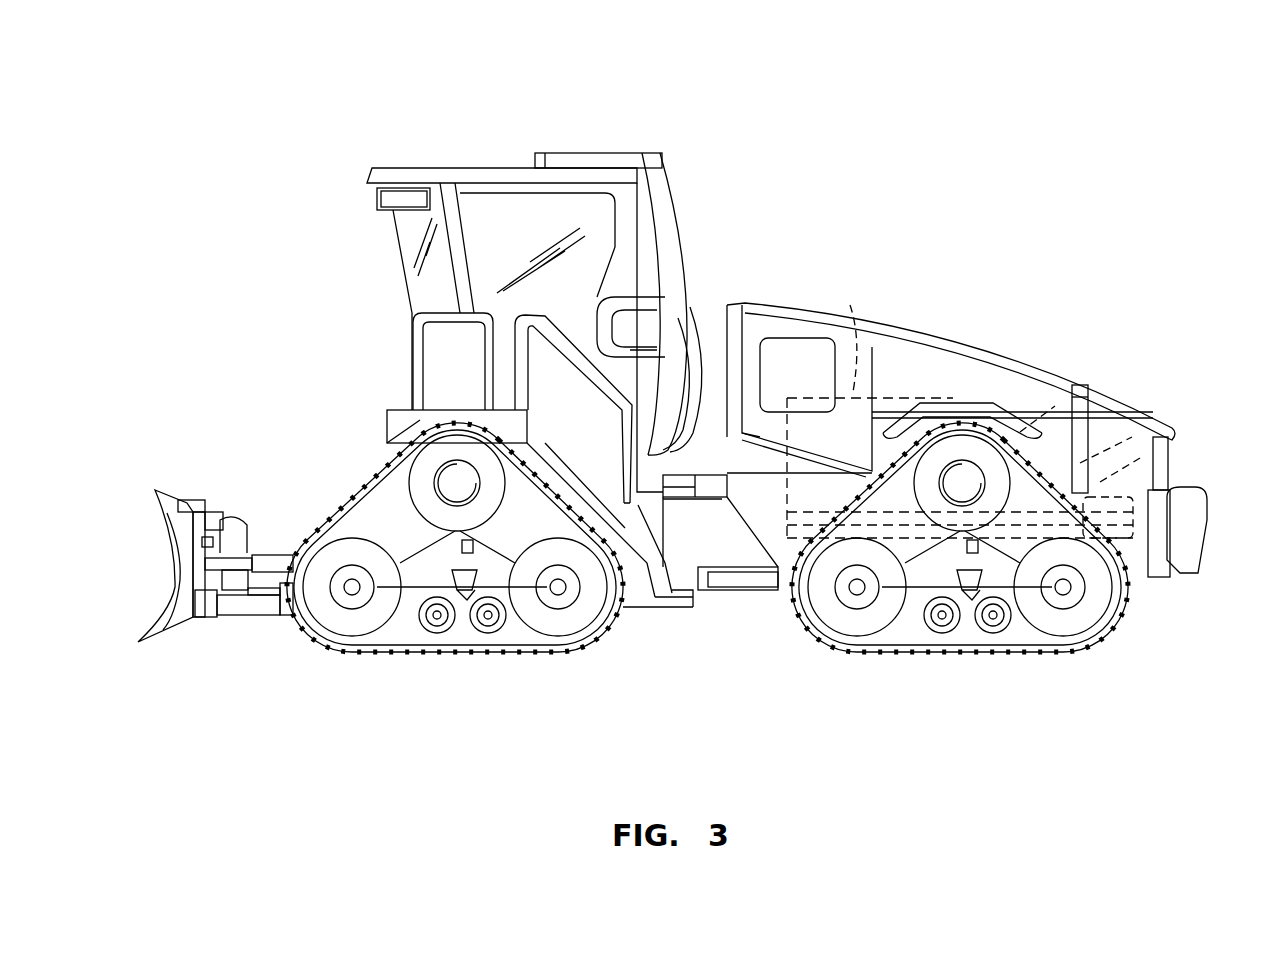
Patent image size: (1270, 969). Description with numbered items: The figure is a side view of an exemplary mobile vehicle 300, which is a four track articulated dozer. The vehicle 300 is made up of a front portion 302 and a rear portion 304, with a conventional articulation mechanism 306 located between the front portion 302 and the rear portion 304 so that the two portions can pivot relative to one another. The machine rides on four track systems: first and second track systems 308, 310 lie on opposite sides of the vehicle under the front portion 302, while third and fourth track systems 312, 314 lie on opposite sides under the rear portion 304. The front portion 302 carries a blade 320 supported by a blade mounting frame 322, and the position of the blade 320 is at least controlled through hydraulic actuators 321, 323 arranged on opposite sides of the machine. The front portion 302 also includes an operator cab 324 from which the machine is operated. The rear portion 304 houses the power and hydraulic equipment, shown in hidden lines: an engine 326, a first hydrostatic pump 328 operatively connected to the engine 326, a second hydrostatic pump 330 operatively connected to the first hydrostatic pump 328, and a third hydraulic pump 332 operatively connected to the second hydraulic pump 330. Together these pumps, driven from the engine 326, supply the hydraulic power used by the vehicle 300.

The mobile vehicle 300 is at (920, 124).
The front portion 302 is at (366, 240).
The rear portion 304 is at (966, 326).
The articulation mechanism 306 is at (749, 605).
The first track system 308 is at (480, 668).
The second track system 310 is at (455, 537).
The third track system 312 is at (1010, 668).
The fourth track system 314 is at (960, 537).
The blade 320 is at (178, 510).
The hydraulic actuator 321 is at (273, 557).
The blade mounting frame 322 is at (260, 612).
The hydraulic actuator 323 is at (249, 575).
The operator cab 324 is at (508, 222).
The engine 326 is at (850, 305).
The first hydrostatic pump 328 is at (1043, 416).
The second hydrostatic pump 330 is at (1180, 406).
The third hydraulic pump 332 is at (1160, 458).